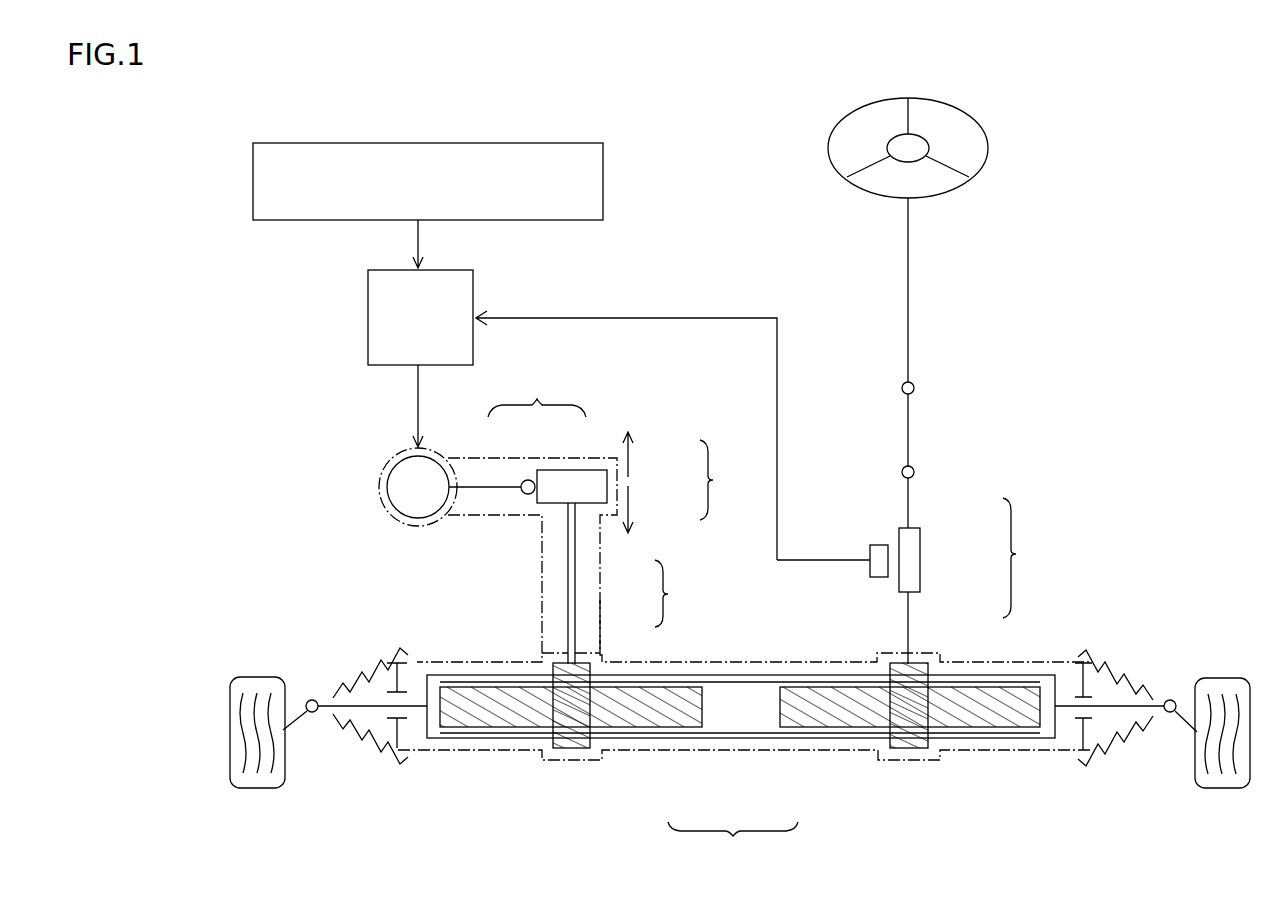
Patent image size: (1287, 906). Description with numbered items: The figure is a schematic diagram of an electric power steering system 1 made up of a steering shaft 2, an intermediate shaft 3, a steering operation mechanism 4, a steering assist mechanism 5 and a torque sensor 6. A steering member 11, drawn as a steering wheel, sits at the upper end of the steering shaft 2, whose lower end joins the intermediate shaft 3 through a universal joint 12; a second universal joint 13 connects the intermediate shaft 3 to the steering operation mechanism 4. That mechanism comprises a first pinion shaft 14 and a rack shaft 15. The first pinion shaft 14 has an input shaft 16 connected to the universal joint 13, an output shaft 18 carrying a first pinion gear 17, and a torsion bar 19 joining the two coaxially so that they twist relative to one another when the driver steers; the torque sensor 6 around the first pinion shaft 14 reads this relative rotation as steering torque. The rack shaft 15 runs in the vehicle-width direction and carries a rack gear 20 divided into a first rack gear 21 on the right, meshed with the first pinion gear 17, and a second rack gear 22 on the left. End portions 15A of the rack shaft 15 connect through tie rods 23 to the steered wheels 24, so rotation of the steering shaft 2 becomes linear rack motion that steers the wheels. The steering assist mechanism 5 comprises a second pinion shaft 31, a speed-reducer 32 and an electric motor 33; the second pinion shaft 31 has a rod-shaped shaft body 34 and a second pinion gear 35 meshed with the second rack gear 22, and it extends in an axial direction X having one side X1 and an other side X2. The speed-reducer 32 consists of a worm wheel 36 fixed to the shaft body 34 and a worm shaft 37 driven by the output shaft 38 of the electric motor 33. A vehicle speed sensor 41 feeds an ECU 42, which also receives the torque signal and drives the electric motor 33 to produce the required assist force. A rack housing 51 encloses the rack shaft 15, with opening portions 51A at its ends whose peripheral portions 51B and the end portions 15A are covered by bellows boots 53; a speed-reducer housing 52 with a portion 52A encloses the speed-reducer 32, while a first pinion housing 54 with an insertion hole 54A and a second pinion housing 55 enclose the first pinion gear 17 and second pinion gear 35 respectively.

The electric power steering system 1 is at (709, 194).
The steering shaft 2 is at (912, 287).
The intermediate shaft 3 is at (912, 430).
The steering operation mechanism 4 is at (755, 647).
The steering assist mechanism 5 is at (611, 452).
The torque sensor 6 is at (880, 544).
The steering member 11 is at (984, 128).
The universal joint 12 is at (902, 387).
The universal joint 13 is at (902, 470).
The first pinion shaft 14 is at (976, 558).
The rack shaft 15 is at (848, 751).
The end portion 15A is at (320, 697).
The input shaft 16 is at (912, 503).
The first pinion gear 17 is at (912, 750).
The output shaft 18 is at (912, 618).
The torsion bar 19 is at (922, 560).
The rack gear 20 is at (740, 778).
The first rack gear 21 is at (800, 725).
The second rack gear 22 is at (667, 727).
The tie rod 23 is at (300, 722).
The steered wheel 24 is at (257, 675).
The second pinion shaft 31 is at (683, 593).
The speed-reducer 32 is at (537, 392).
The electric motor 33 is at (380, 486).
The shaft body 34 is at (578, 582).
The second pinion gear 35 is at (597, 635).
The worm wheel 36 is at (572, 470).
The worm shaft 37 is at (526, 479).
The output shaft 38 is at (477, 483).
The vehicle speed sensor 41 is at (446, 141).
The electronic control unit 42 is at (366, 316).
The rack housing 51 is at (433, 752).
The opening portion 51A is at (355, 655).
The peripheral portion 51B is at (418, 660).
The speed-reducer housing 52 is at (497, 517).
The gear housing portion 52A is at (587, 538).
The boot 53 is at (386, 647).
The first pinion housing 54 is at (940, 662).
The insertion hole 54A is at (907, 651).
The second pinion housing 55 is at (593, 665).
The axial direction X is at (679, 482).
The one side X1 is at (636, 497).
The other side X2 is at (636, 460).